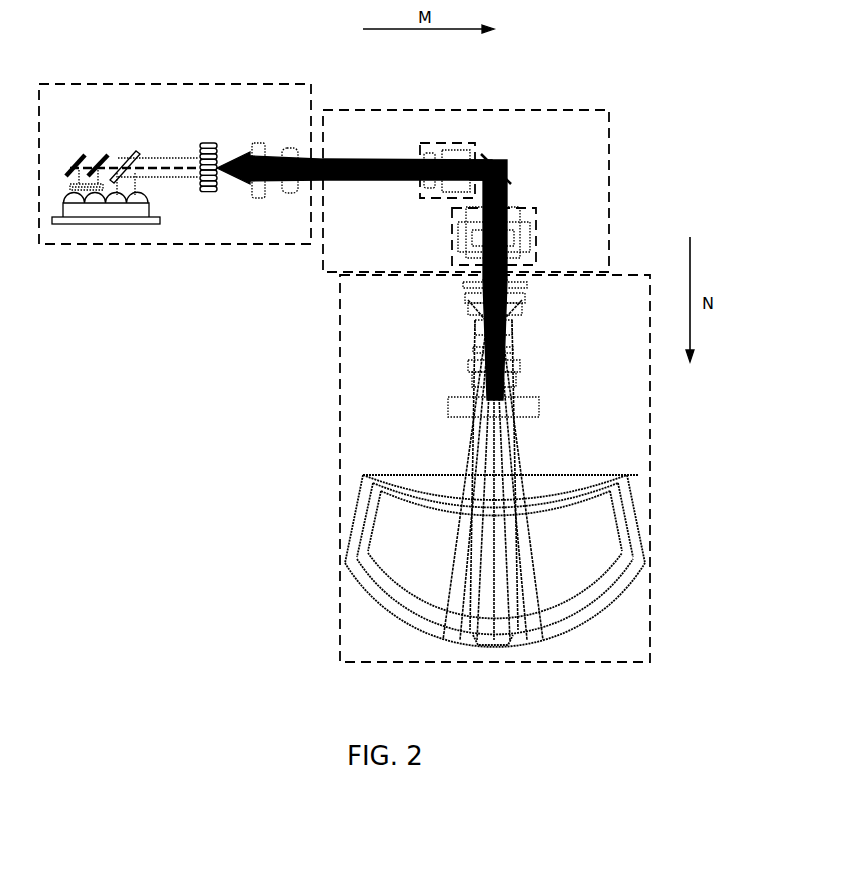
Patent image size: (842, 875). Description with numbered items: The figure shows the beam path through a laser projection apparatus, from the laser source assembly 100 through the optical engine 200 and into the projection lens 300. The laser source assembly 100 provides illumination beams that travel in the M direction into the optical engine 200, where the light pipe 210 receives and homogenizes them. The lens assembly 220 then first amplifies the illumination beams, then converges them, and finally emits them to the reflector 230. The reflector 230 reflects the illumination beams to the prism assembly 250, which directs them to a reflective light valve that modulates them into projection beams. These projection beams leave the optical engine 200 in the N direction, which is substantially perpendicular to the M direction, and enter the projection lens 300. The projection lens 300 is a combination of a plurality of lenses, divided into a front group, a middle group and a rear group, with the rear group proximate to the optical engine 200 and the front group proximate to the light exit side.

The laser source assembly 100 is at (192, 244).
The optical engine 200 is at (506, 161).
The light pipe 210 is at (364, 166).
The lens assembly 220 is at (443, 143).
The reflector 230 is at (495, 172).
The prism assembly 250 is at (515, 242).
The projection lens 300 is at (650, 460).